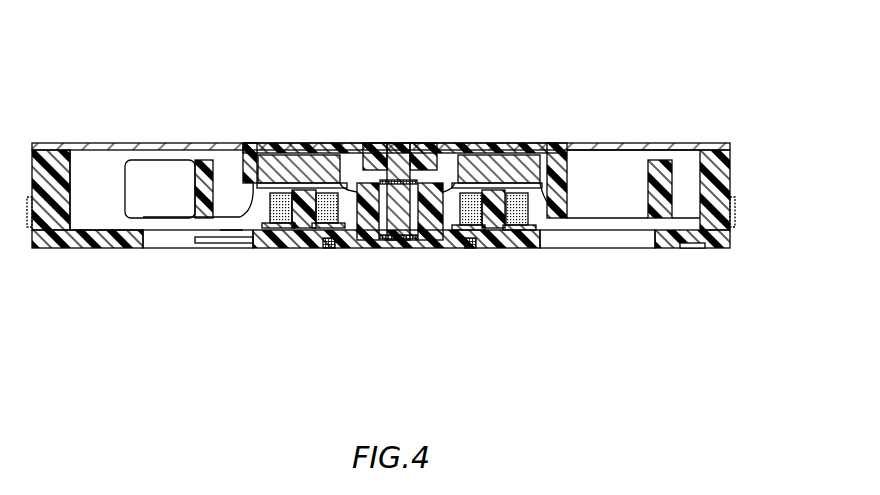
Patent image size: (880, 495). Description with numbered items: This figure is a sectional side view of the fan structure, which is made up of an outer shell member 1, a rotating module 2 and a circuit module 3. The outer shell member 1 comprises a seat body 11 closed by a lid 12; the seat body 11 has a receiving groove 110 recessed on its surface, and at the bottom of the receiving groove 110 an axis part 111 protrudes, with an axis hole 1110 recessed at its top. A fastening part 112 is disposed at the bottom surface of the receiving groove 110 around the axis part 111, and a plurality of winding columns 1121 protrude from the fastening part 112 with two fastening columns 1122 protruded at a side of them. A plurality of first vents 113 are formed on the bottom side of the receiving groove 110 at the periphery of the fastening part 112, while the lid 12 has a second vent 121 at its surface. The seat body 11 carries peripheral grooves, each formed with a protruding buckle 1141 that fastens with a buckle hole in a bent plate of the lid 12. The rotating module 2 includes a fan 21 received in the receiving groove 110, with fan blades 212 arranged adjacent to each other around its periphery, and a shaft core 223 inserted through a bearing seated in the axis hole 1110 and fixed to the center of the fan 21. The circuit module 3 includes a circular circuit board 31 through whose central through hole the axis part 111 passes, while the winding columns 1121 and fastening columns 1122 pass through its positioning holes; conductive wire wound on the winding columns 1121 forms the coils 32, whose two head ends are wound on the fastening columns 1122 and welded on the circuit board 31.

The outer shell member 1 is at (760, 263).
The seat body 11 is at (723, 237).
The receiving groove 110 is at (95, 165).
The axis part 111 is at (432, 190).
The axis hole 1110 is at (438, 242).
The winding columns 1121 is at (484, 193).
The fastening columns 1122 is at (533, 222).
The fastening part 112 is at (487, 245).
The first vents 113 is at (145, 248).
The buckle 1141 is at (735, 208).
The lid 12 is at (680, 145).
The second vent 121 is at (606, 142).
The rotating module 2 is at (283, 100).
The fan 21 is at (312, 143).
The fan blades 212 is at (150, 175).
The shaft core 223 is at (395, 143).
The circuit module 3 is at (236, 281).
The circuit board 31 is at (270, 222).
The coils 32 is at (535, 218).